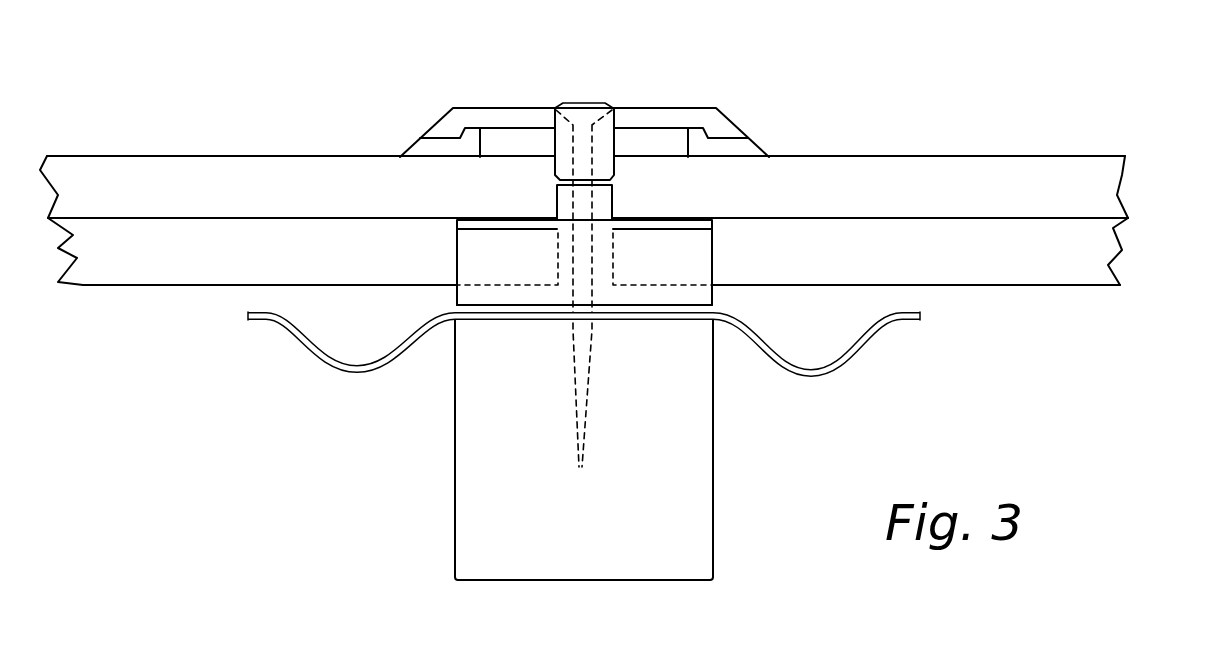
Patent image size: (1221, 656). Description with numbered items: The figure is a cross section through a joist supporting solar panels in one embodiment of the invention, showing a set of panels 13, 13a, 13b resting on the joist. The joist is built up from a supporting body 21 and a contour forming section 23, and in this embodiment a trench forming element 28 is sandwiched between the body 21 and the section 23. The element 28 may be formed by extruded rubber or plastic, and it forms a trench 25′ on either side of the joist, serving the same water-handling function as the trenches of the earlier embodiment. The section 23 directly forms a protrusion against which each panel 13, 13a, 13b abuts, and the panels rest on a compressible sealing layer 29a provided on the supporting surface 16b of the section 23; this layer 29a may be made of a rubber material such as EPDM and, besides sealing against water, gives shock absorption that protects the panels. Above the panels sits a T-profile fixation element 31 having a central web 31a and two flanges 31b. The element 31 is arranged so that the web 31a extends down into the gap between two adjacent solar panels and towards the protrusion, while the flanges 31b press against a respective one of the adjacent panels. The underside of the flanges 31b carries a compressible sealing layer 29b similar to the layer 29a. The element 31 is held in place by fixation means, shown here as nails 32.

The panel 13 is at (177, 178).
The panel 13a is at (1055, 193).
The panel 13b is at (1082, 265).
The T-profile fixation element 31 is at (680, 107).
The central web 31a is at (562, 150).
The flanges 31b is at (447, 130).
The nails 32 is at (581, 103).
The compressible sealing layer 29a is at (673, 218).
The compressible sealing layer 29b is at (747, 150).
The supporting surface 16b is at (693, 228).
The contour forming section 23 is at (713, 300).
The trench forming element 28 is at (888, 343).
The trench 25′ is at (822, 378).
The supporting body 21 is at (687, 468).